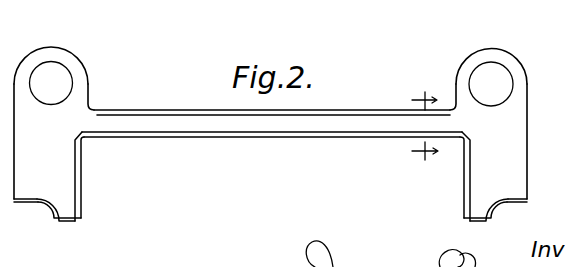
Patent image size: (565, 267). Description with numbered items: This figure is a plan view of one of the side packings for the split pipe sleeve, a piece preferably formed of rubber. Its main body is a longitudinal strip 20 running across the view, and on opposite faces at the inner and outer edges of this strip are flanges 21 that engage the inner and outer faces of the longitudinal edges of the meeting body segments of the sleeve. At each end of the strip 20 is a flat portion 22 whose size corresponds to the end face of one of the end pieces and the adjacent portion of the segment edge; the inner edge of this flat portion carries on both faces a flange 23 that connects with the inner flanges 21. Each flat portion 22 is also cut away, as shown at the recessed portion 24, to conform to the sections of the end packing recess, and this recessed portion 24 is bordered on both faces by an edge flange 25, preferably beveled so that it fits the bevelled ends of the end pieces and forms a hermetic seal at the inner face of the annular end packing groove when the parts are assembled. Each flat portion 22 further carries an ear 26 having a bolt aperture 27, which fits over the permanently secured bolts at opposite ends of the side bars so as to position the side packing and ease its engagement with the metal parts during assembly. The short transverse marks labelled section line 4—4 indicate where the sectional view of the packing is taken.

The longitudinal strip 20 is at (199, 123).
The flanges 21 is at (327, 112).
The flat portion 22 is at (270, 141).
The flange 23 is at (78, 192).
The recessed portion 24 is at (38, 202).
The edge flange 25 is at (58, 222).
The ear 26 is at (82, 78).
The bolt aperture 27 is at (57, 72).
The section line 4- 4 is at (425, 127).